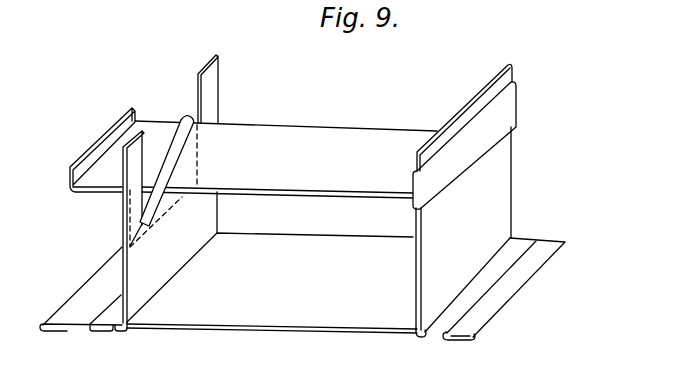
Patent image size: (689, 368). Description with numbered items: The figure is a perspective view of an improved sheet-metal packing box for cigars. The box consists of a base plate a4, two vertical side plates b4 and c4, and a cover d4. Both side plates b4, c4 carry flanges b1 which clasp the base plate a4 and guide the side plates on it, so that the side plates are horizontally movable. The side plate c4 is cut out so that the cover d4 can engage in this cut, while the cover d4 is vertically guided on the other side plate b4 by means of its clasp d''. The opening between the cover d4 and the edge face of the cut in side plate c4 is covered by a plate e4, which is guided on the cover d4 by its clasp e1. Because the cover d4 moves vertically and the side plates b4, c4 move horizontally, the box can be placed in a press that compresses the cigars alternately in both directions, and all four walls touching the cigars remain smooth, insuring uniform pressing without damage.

The base plate a4 is at (272, 283).
The side plate b4 is at (490, 233).
The flange b1 is at (102, 325).
The side plate c4 is at (198, 212).
The cover d4 is at (286, 159).
The clasp d'' is at (491, 136).
The clasp e1 is at (173, 136).
The plate e4 is at (118, 188).